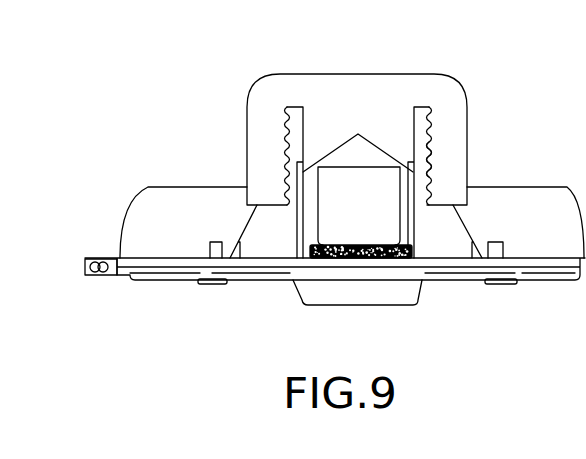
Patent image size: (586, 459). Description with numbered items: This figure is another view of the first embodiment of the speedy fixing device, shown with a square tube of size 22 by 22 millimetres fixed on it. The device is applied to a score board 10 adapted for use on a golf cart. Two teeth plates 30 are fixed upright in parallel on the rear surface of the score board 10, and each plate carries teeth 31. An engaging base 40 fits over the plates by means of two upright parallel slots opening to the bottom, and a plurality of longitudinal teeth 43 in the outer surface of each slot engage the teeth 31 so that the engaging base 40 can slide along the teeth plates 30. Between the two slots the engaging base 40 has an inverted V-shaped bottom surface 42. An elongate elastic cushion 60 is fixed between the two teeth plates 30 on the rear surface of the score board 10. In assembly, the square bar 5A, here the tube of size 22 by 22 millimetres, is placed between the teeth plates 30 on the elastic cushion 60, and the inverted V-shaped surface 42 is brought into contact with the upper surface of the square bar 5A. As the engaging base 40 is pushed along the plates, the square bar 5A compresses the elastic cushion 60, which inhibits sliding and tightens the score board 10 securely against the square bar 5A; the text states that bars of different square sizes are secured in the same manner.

The score board 10 is at (238, 265).
The teeth plate 30 is at (429, 108).
The teeth 31 is at (496, 151).
The longitudinal teeth 43 is at (432, 162).
The engaging base 40 is at (422, 87).
The inverted V-shaped bottom surface 42 is at (380, 147).
The elongate elastic cushion 60 is at (332, 250).
The square bar 5A is at (424, 291).
The chip dimension 22 is at (392, 232).